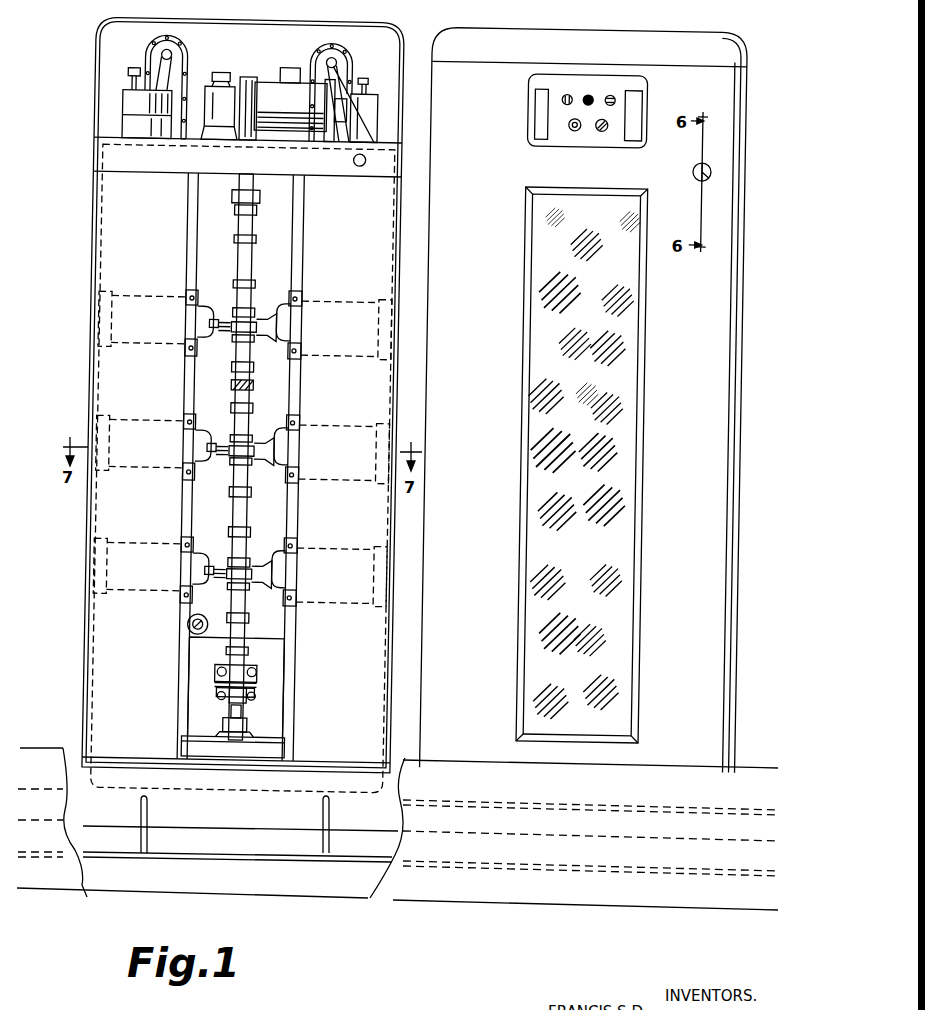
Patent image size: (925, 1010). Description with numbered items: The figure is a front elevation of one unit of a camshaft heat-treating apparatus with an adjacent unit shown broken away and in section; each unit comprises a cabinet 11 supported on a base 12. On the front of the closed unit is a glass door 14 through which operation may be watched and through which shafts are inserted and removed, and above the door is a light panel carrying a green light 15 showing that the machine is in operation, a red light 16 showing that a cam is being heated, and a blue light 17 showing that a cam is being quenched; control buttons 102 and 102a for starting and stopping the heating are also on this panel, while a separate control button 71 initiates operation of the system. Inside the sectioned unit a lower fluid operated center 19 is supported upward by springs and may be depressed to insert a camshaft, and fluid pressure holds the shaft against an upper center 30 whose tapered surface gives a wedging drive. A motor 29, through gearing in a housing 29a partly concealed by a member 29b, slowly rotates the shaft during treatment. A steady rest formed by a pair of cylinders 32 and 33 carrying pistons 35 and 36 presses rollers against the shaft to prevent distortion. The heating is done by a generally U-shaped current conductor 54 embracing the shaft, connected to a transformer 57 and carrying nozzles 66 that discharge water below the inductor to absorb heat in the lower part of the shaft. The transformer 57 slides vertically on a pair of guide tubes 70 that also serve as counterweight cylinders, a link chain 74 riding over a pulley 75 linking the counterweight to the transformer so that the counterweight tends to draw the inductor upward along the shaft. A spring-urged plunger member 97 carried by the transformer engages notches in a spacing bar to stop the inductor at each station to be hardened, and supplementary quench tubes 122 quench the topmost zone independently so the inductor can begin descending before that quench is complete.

The cabinet 11 is at (89, 372).
The base 12 is at (631, 906).
The glass door 14 is at (635, 542).
The green light 15 is at (588, 88).
The red light 16 is at (566, 88).
The blue light 17 is at (615, 88).
The fluid operated center 19 is at (237, 712).
The motor 29 is at (265, 82).
The gearing housing 29a is at (222, 72).
The concealing member 29b is at (176, 163).
The upper center 30 is at (234, 191).
The cylinder 32 is at (142, 313).
The cylinder 33 is at (346, 322).
The piston 35 is at (278, 324).
The piston 36 is at (208, 323).
The U-shaped current conductor 54 is at (261, 684).
The transformer 57 is at (281, 641).
The nozzles 66 is at (219, 684).
The guide tubes 70 is at (117, 124).
The control button 71 is at (689, 171).
The link chain 74 is at (182, 61).
The pulley 75 is at (141, 44).
The plunger member 97 is at (206, 618).
The control button 102 is at (567, 131).
The control button 102a is at (599, 132).
The supplementary quench tubes 122 is at (252, 196).